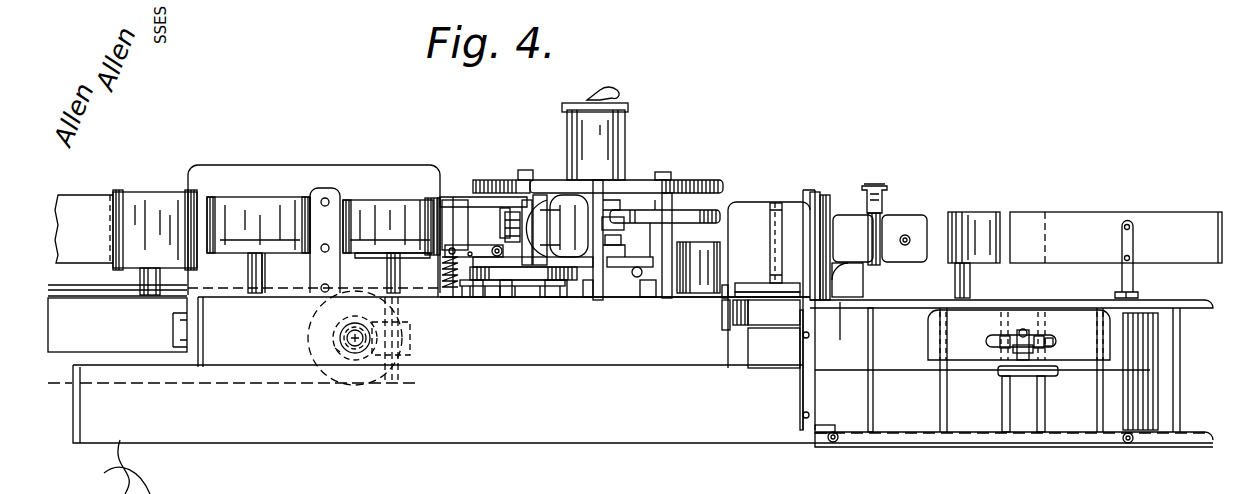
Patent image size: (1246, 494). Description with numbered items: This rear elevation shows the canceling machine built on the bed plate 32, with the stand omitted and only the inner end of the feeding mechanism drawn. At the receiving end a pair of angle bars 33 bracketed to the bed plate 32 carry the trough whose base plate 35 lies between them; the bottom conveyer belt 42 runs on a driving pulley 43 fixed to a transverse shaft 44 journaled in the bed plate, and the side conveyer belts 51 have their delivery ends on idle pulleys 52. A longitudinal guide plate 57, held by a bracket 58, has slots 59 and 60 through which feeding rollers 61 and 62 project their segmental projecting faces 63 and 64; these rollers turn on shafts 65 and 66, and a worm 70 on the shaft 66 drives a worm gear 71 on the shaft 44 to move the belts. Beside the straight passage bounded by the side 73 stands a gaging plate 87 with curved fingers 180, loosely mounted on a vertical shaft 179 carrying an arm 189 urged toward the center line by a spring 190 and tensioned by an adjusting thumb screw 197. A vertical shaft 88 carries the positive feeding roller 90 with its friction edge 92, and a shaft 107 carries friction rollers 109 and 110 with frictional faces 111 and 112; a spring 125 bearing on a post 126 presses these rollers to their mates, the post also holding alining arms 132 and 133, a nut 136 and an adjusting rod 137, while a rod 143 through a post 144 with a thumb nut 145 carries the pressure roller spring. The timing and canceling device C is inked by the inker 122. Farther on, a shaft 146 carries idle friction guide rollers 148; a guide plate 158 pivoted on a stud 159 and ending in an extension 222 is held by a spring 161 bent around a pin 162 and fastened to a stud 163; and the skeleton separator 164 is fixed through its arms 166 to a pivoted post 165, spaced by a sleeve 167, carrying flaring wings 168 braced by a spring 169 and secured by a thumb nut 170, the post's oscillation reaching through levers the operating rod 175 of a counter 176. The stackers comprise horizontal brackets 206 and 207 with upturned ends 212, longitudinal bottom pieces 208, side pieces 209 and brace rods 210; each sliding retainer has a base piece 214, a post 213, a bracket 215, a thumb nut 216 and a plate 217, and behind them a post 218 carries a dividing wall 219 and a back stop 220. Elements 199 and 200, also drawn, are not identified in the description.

The bed plate 32 is at (630, 404).
The angle bars 33 is at (117, 325).
The base plate 35 is at (90, 296).
The bottom conveyer belt 42 is at (97, 284).
The driving pulley 43 is at (307, 338).
The transverse shaft 44 is at (352, 338).
The side conveyer belts 51 is at (84, 229).
The idle pulleys 52 is at (135, 193).
The longitudinal guide plate 57 is at (338, 165).
The bracket 58 is at (325, 240).
The slot 59 is at (246, 257).
The slot 60 is at (370, 259).
The feeding roller 61 is at (258, 258).
The feeding roller 62 is at (390, 240).
The segmental projecting face 63 is at (232, 200).
The segmental projecting face 64 is at (372, 202).
The shaft 65 is at (264, 268).
The shaft 66 is at (400, 268).
The worm 70 is at (411, 336).
The worm gear 71 is at (337, 350).
The side of straight passage 73 is at (465, 200).
The gaging plate 87 is at (504, 214).
The vertical shaft 88 is at (504, 181).
The positive feeding roller 90 is at (524, 171).
The friction edge 92 is at (528, 200).
The vertical shaft 107 is at (676, 240).
The friction roller 109 is at (706, 192).
The friction roller 110 is at (684, 212).
The circumferential frictional face 111 is at (698, 180).
The circumferential frictional face 112 is at (724, 210).
The inker 122 is at (626, 140).
The spring 125 is at (640, 192).
The post 126 is at (608, 232).
The alining arm 132 is at (542, 196).
The alining arm 133 is at (556, 298).
The nut 136 is at (597, 180).
The rod 137 is at (552, 282).
The rod 143 is at (630, 280).
The post 144 is at (640, 278).
The thumb nut 145 is at (652, 282).
The shaft 146 is at (814, 192).
The friction guide rollers 148 is at (826, 200).
The guide plate 158 is at (759, 243).
The stud 159 is at (772, 262).
The spring 161 is at (768, 280).
The pin 162 is at (753, 317).
The stud 163 is at (726, 328).
The skeleton separator 164 is at (832, 240).
The pivoted post 165 is at (868, 238).
The backwardly extending arms 166 is at (852, 280).
The sleeve 167 is at (880, 306).
The flaring wings 168 is at (900, 258).
The spring 169 is at (900, 230).
The thumb nut 170 is at (884, 186).
The operating rod 175 is at (728, 368).
The counter 176 is at (774, 348).
The vertical shaft 179 is at (432, 198).
The curved fingers 180 is at (504, 210).
The arm 189 is at (484, 253).
The spring 190 is at (468, 281).
The adjusting thumb screw 197 is at (486, 287).
The roll 199 is at (982, 208).
The post 200 is at (970, 278).
The horizontal brackets 206 is at (1052, 306).
The horizontal brackets 207 is at (978, 420).
The longitudinal bottom pieces 208 is at (938, 402).
The longitudinal side pieces 209 is at (803, 400).
The brace rods 210 is at (815, 432).
The upwardly projecting ends 212 is at (803, 192).
The post 213 is at (1002, 372).
The base piece 214 is at (1046, 374).
The bracket 215 is at (994, 338).
The thumb nut 216 is at (1021, 337).
The plate 217 is at (1068, 336).
The post 218 is at (1134, 280).
The dividing wall 219 is at (1116, 237).
The back stop 220 is at (1216, 240).
The extensions 222 is at (832, 310).
The timing and canceling device C is at (722, 292).